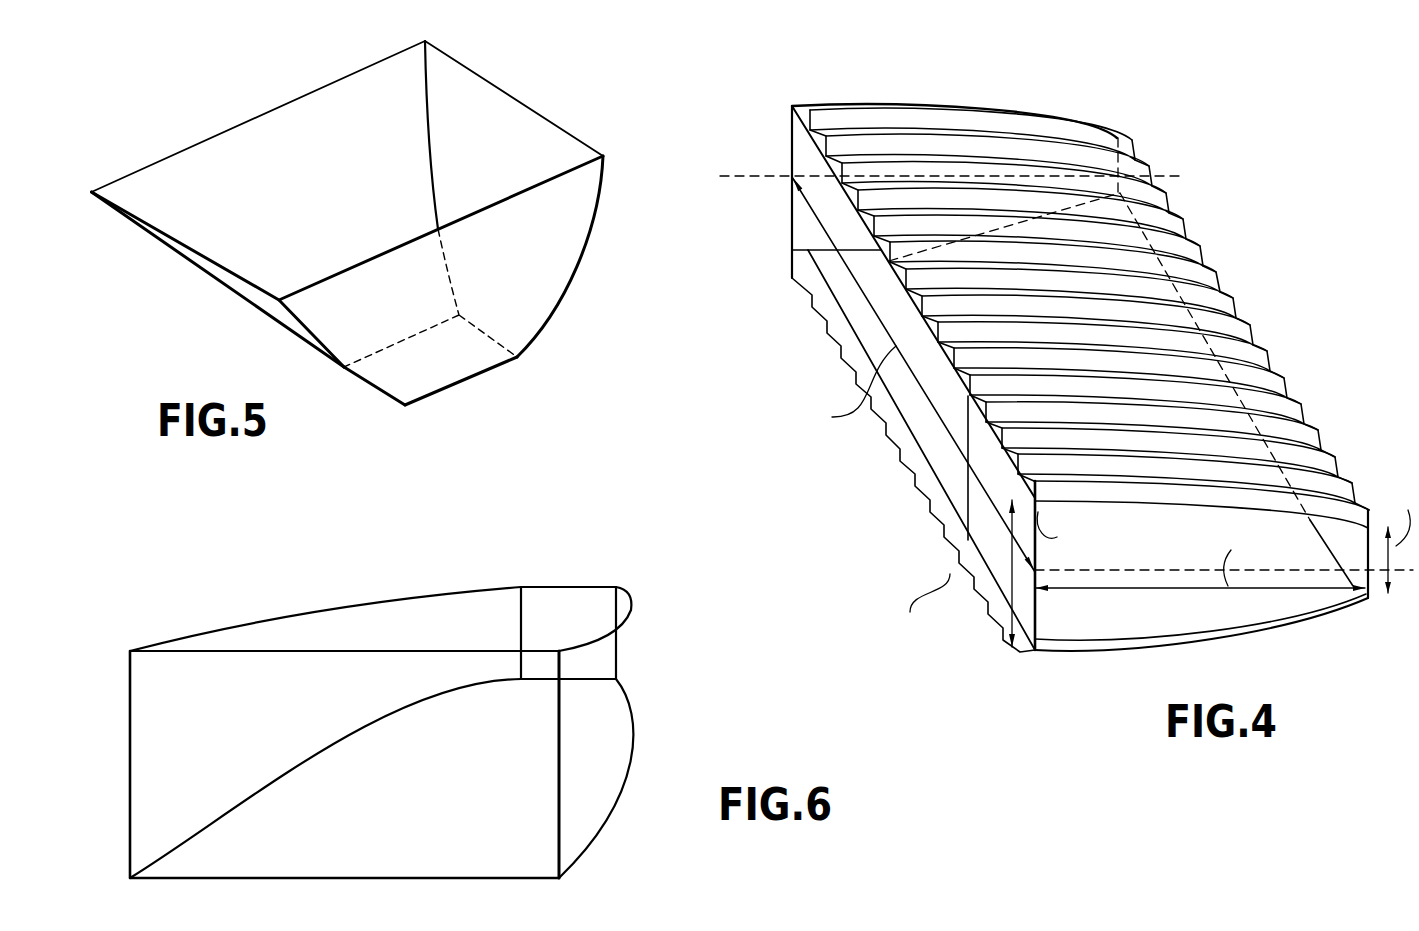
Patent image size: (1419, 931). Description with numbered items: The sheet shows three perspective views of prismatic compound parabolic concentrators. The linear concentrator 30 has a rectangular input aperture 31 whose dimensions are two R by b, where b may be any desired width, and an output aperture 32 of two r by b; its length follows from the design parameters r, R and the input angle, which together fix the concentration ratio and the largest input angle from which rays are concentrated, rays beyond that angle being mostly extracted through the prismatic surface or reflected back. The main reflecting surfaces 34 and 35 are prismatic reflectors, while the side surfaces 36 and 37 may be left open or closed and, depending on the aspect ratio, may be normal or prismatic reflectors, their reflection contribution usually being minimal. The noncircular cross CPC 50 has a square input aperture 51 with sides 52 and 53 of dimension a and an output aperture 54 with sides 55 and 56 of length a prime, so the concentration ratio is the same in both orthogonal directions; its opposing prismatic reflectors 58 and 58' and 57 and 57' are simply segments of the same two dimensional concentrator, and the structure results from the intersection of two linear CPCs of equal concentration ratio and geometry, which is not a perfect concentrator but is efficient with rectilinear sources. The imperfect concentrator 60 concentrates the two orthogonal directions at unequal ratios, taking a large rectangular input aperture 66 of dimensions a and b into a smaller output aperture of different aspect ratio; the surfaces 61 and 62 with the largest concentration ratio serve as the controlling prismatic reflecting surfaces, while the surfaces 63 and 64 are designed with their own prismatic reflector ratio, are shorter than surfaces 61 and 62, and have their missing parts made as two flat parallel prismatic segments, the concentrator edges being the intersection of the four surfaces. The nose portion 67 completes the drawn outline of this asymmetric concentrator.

In FIG. 4, the linear concentrator 30 is at (1099, 100).
In FIG. 4, the rectangular input aperture 31 is at (856, 316).
In FIG. 4, the output aperture 32 is at (1318, 488).
In FIG. 4, the main reflecting surface 34 is at (1113, 323).
In FIG. 4, the main reflecting surface 35 is at (938, 503).
In FIG. 4, the side surface 36 is at (1076, 641).
In FIG. 4, the side surface 37 is at (806, 231).
In FIG. 5, the noncircular CPC 50 is at (557, 110).
In FIG. 5, the square input aperture 51 is at (393, 173).
In FIG. 5, the side of input aperture 52 is at (222, 131).
In FIG. 5, the side of input aperture 53 is at (189, 250).
In FIG. 5, the output aperture 54 is at (417, 372).
In FIG. 5, the side of output aperture 55 is at (484, 374).
In FIG. 5, the side of output aperture 56 is at (482, 326).
In FIG. 5, the prismatic reflector 57 is at (266, 333).
In FIG. 5, the prismatic reflector 57' is at (586, 256).
In FIG. 5, the prismatic reflector 58 is at (365, 382).
In FIG. 5, the prismatic reflector 58' is at (214, 278).
In FIG. 6, the imperfect concentrator 60 is at (240, 618).
In FIG. 6, the controlling prismatic reflecting surface 61 is at (171, 691).
In FIG. 6, the controlling prismatic reflecting surface 62 is at (606, 726).
In FIG. 6, the prismatic reflector surface 63 is at (508, 740).
In FIG. 6, the prismatic reflector surface 64 is at (468, 608).
In FIG. 6, the rectangular input aperture 66 is at (496, 862).
In FIG. 6, the rounded nose 67 is at (576, 618).